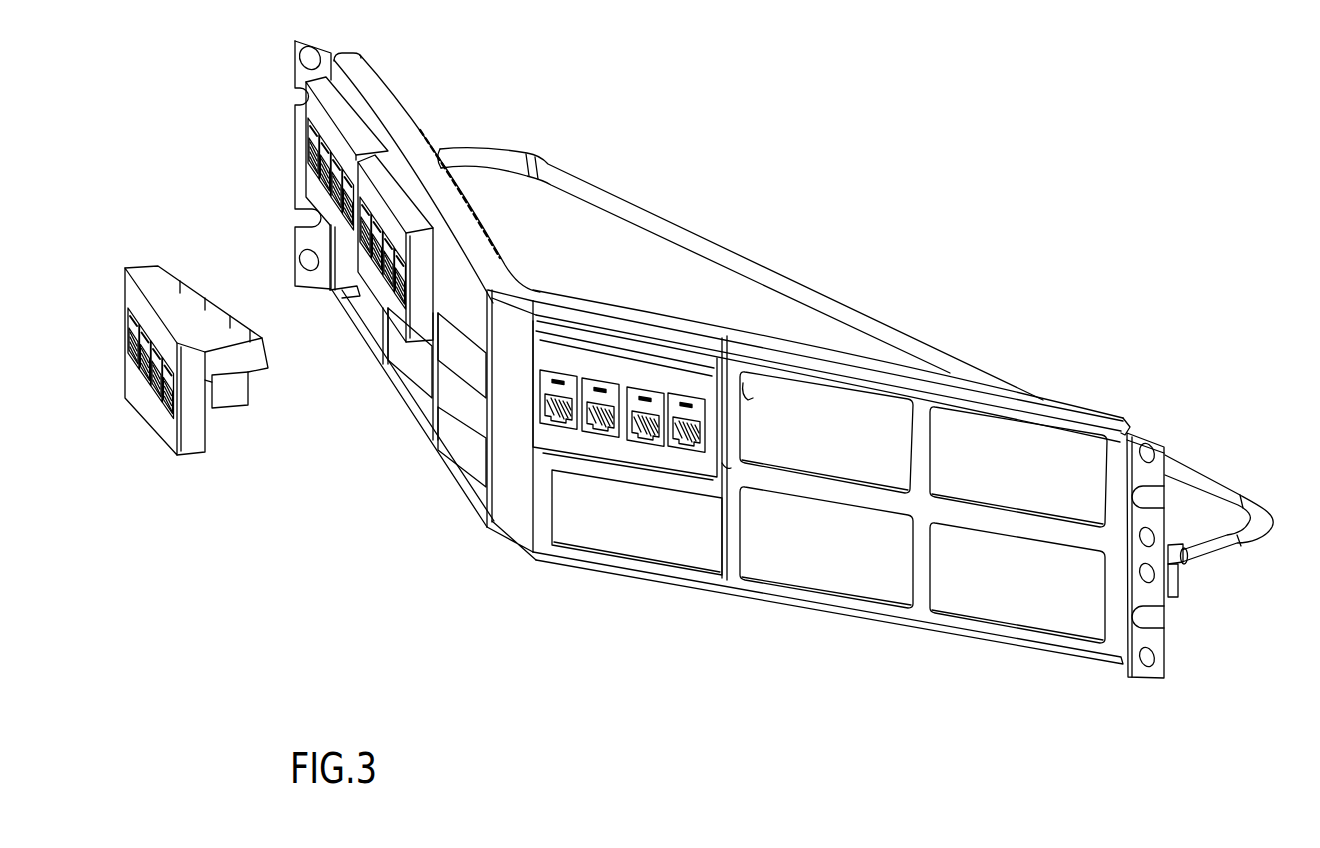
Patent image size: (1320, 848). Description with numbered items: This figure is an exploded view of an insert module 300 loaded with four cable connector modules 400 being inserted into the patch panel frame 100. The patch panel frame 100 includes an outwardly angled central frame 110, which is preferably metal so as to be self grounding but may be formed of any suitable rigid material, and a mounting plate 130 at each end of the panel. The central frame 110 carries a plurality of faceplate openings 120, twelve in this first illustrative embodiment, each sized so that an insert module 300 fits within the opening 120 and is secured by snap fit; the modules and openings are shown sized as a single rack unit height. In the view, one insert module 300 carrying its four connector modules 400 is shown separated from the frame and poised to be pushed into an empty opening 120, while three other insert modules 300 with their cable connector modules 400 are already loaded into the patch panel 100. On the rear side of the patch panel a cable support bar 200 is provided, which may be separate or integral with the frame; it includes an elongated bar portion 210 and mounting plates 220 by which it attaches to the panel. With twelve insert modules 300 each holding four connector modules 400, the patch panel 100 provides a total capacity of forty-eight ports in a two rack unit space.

The patch panel frame 100 is at (413, 472).
The central frame 110 is at (963, 633).
The faceplate openings 120 is at (822, 568).
The mounting plate 130 is at (1143, 633).
The cable support bar 200 is at (927, 302).
The bar portion 210 is at (730, 247).
The mounting plates 220 is at (1188, 558).
The insert module 300 is at (145, 263).
The cable connector modules 400 is at (150, 392).